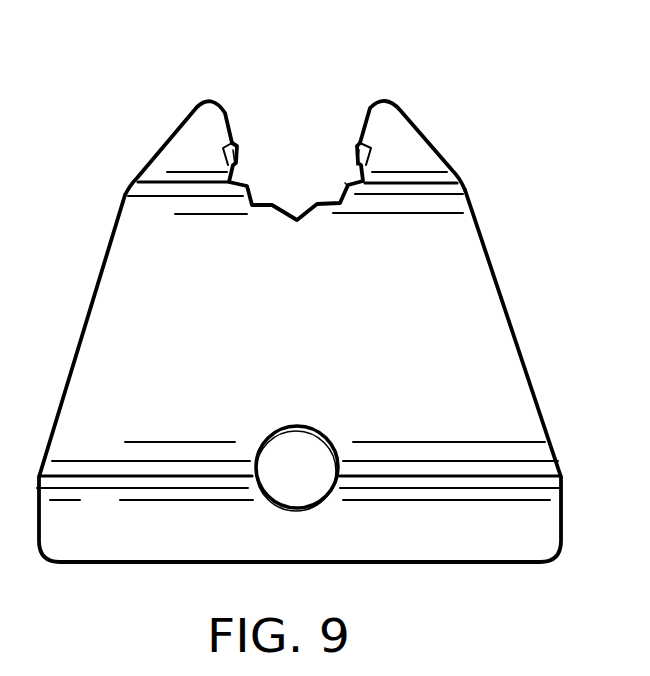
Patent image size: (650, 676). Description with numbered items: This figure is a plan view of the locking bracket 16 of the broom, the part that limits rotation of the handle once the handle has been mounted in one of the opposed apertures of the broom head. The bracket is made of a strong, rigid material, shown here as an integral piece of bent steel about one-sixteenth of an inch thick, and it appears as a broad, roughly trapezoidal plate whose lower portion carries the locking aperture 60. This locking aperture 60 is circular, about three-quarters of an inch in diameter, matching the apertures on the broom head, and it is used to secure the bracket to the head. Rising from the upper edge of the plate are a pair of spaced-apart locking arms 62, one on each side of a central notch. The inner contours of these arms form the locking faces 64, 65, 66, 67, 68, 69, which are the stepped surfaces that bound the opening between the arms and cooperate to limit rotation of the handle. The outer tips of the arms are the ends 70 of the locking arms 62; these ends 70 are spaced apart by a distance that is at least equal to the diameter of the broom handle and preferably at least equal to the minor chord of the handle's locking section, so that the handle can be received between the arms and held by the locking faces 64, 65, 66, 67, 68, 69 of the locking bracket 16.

The locking bracket 16 is at (395, 332).
The locking aperture 60 is at (297, 507).
The locking arms 62 is at (170, 153).
The locking face 64 is at (250, 183).
The locking face 65 is at (241, 168).
The locking face 66 is at (233, 146).
The locking face 67 is at (357, 166).
The locking face 68 is at (353, 175).
The locking face 69 is at (348, 185).
The ends of the locking arms 70 is at (197, 122).